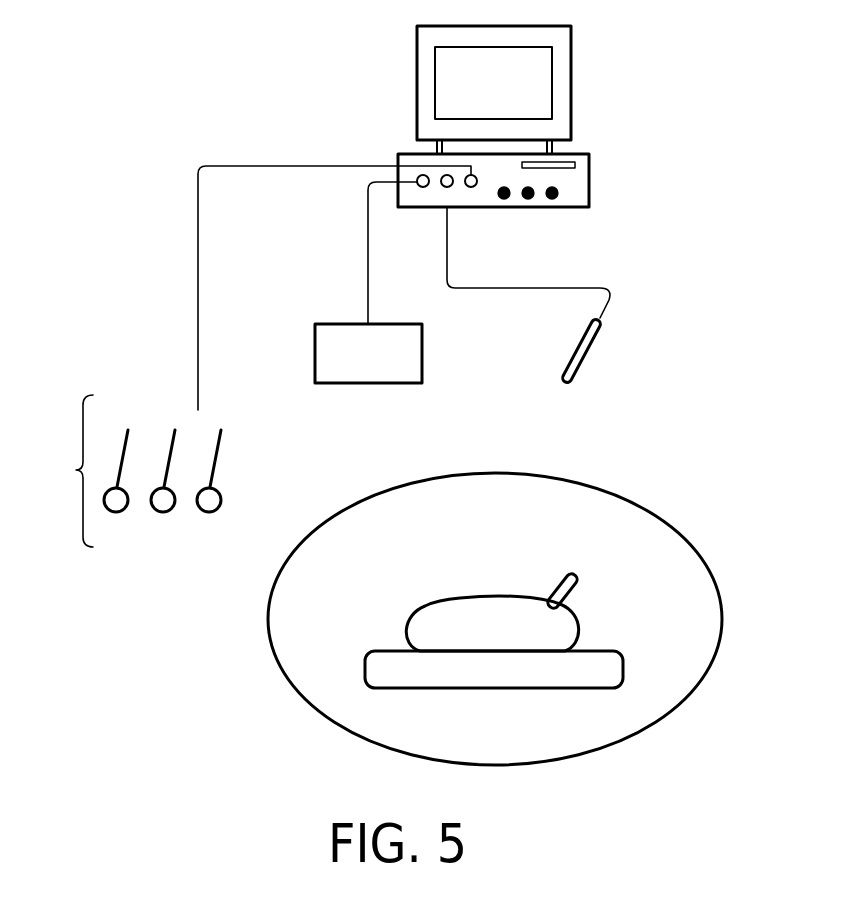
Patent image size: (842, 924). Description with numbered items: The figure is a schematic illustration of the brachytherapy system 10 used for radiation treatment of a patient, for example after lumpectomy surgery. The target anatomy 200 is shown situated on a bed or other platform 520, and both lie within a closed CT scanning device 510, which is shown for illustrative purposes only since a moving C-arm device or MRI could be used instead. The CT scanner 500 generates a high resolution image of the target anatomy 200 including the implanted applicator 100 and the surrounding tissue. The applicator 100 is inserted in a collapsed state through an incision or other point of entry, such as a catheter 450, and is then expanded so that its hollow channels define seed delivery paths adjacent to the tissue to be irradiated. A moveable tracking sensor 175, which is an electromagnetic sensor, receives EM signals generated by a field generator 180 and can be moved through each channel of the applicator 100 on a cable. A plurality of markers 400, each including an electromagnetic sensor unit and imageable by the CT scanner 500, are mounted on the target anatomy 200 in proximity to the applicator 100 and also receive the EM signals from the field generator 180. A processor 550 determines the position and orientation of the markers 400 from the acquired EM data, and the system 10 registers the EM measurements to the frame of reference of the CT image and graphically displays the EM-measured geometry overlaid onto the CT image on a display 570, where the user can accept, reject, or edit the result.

The brachytherapy system 10 is at (161, 94).
The display 570 is at (513, 97).
The processor 550 is at (590, 180).
The field generator 180 is at (389, 367).
The tracking sensor 175 is at (553, 288).
The applicator 100 is at (582, 343).
The markers 400 is at (251, 356).
The CT scanner 500 is at (700, 491).
The closed CT scanning device 510 is at (268, 620).
The target anatomy 200 is at (490, 597).
The catheter 450 is at (578, 577).
The platform 520 is at (383, 651).